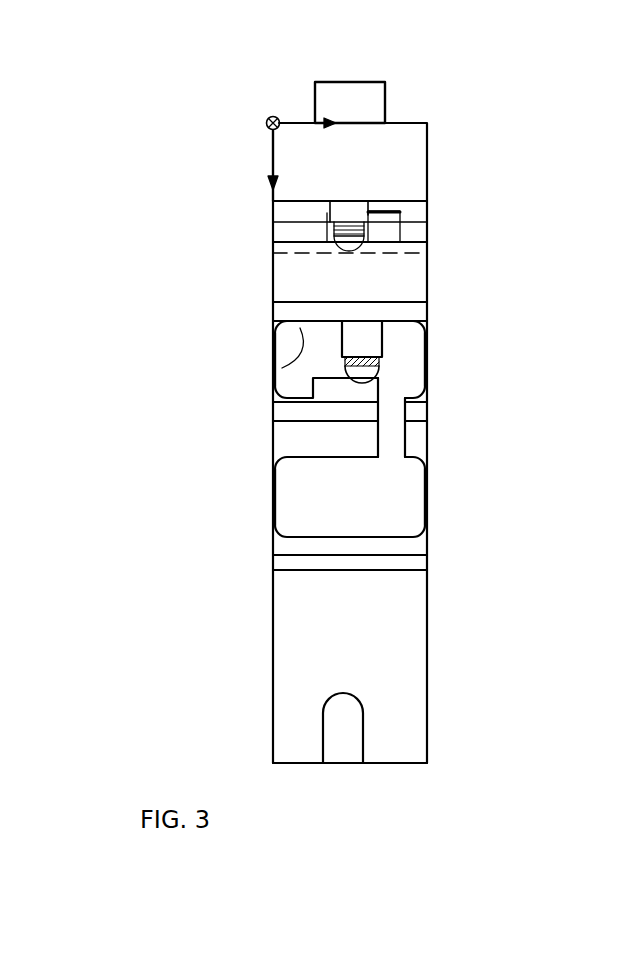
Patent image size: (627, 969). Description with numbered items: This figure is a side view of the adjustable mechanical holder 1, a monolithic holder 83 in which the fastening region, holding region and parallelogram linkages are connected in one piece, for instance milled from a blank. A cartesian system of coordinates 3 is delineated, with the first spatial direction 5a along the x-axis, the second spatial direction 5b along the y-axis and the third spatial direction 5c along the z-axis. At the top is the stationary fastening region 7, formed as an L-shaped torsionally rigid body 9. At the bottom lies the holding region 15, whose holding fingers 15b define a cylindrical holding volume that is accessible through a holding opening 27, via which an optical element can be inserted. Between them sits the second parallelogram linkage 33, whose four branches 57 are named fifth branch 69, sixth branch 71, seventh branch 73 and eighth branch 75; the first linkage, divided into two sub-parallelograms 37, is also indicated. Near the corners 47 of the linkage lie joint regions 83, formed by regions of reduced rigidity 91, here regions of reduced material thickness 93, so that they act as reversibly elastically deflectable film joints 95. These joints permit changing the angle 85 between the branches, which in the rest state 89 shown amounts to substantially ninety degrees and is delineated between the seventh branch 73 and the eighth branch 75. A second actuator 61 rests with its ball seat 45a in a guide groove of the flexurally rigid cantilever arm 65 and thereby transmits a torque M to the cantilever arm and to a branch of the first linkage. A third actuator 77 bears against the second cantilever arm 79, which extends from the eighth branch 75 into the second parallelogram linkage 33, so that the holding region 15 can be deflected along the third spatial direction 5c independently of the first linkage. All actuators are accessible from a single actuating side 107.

The adjustable mechanical holder 1 is at (492, 66).
The cartesian system of coordinates 3 is at (254, 130).
The first spatial direction 5a is at (268, 150).
The second spatial direction 5b is at (268, 117).
The third spatial direction 5c is at (296, 119).
The stationary fastening region 7 is at (538, 123).
The L-shaped torsionally rigid body 9 is at (427, 147).
The holding region 15 is at (538, 550).
The holding fingers 15b is at (405, 764).
The holding opening 27 is at (441, 642).
The second parallelogram linkage 33 is at (538, 545).
The sub-parallelograms 37 is at (345, 572).
The ball seat 45a is at (400, 254).
The corners 47 is at (262, 301).
The branches 57 is at (288, 440).
The second actuator 61 is at (388, 97).
The flexurally rigid cantilever arm 65 is at (300, 236).
The fifth branch 69 is at (283, 257).
The sixth branch 71 is at (428, 442).
The seventh branch 73 is at (368, 542).
The eighth branch 75 is at (297, 442).
The third actuator 77 is at (357, 335).
The second cantilever arm 79 is at (300, 412).
The joint regions 83 is at (465, 492).
The angle 85 is at (328, 542).
The rest state 89 is at (366, 429).
The regions of reduced rigidity 91 is at (292, 511).
The regions of reduced material thickness 93 is at (363, 436).
The film joints 95 is at (262, 493).
The actuating side 107 is at (222, 103).
The torque M is at (308, 351).